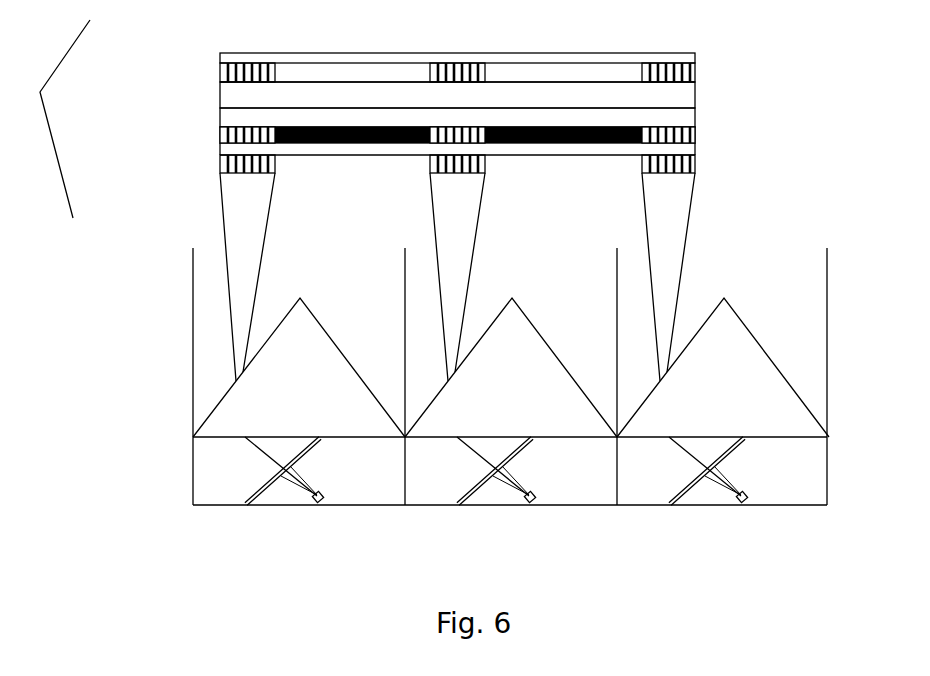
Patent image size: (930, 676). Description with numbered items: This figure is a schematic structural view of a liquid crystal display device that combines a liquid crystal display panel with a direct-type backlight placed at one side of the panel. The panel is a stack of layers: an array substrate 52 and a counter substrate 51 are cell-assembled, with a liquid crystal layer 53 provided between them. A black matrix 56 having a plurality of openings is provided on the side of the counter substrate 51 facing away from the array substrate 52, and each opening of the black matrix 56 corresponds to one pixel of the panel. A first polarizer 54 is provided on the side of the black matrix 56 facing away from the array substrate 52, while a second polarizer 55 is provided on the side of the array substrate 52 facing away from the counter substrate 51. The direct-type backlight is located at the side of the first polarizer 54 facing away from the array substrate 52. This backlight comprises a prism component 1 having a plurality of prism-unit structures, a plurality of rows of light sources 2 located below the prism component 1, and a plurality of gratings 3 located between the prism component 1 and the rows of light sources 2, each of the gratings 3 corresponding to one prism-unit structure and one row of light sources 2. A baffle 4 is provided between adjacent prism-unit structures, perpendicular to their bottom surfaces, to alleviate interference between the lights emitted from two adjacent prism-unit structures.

The prism component 1 is at (262, 398).
The rows of light sources 2 is at (316, 505).
The gratings 3 is at (290, 484).
The baffle 4 is at (193, 318).
The counter substrate 51 is at (232, 117).
The array substrate 52 is at (225, 72).
The liquid crystal layer 53 is at (240, 97).
The first polarizer 54 is at (237, 147).
The second polarizer 55 is at (293, 60).
The black matrix 56 is at (225, 143).